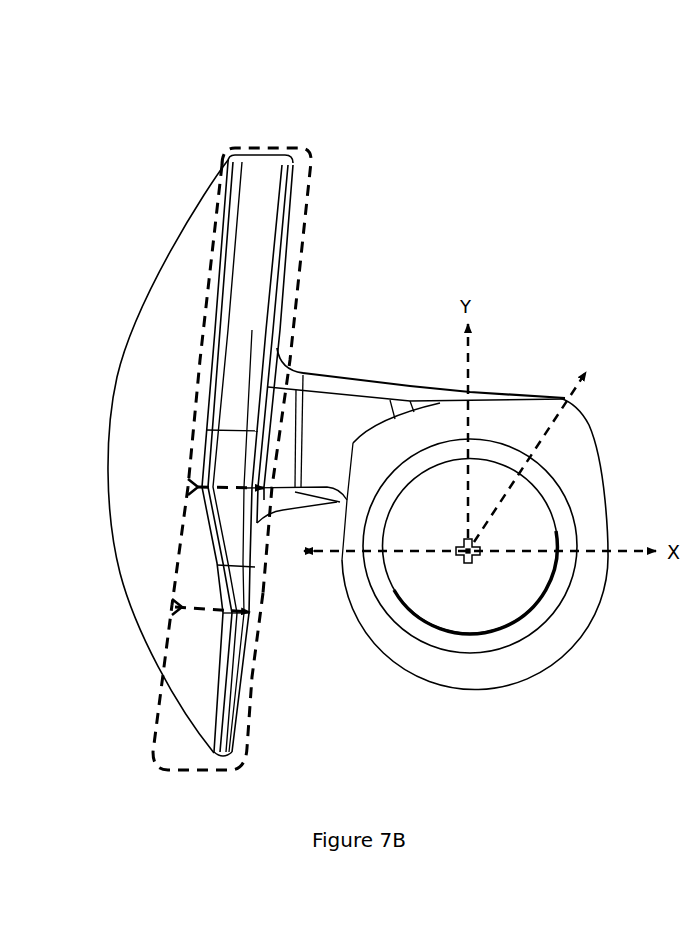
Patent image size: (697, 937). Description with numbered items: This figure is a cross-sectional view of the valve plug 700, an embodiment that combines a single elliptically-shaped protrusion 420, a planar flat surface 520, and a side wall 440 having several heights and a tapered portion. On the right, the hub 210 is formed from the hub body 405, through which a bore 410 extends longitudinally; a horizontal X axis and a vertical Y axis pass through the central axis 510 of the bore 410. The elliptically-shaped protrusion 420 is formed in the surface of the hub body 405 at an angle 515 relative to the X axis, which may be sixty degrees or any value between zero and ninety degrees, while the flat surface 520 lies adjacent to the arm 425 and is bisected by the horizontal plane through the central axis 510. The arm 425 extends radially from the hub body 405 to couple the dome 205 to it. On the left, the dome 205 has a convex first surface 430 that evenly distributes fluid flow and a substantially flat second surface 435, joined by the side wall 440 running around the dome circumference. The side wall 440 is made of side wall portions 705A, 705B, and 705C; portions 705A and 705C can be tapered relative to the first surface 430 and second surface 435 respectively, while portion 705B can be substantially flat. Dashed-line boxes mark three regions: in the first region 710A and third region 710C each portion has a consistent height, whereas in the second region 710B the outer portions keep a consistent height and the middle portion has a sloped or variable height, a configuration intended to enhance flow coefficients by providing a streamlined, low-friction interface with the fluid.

The valve plug 700 is at (162, 193).
The dome 205 is at (123, 291).
The first surface 430 is at (127, 393).
The second surface 435 is at (283, 297).
The side wall 440 is at (350, 100).
The side wall portion 705A is at (235, 177).
The side wall portion 705B is at (258, 165).
The side wall portion 705C is at (287, 162).
The first region 710A is at (305, 243).
The second region 710B is at (175, 542).
The third region 710C is at (153, 713).
The flat surface 520 is at (336, 557).
The arm 425 is at (345, 387).
The elliptically-shaped protrusion 420 is at (557, 395).
The angle 515 is at (627, 550).
The hub 210 is at (538, 683).
The hub body 405 is at (432, 667).
The bore 410 is at (413, 613).
The central axis 510 is at (468, 568).